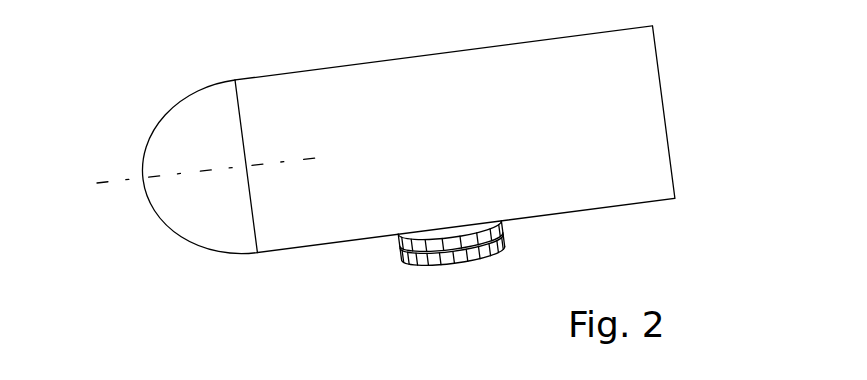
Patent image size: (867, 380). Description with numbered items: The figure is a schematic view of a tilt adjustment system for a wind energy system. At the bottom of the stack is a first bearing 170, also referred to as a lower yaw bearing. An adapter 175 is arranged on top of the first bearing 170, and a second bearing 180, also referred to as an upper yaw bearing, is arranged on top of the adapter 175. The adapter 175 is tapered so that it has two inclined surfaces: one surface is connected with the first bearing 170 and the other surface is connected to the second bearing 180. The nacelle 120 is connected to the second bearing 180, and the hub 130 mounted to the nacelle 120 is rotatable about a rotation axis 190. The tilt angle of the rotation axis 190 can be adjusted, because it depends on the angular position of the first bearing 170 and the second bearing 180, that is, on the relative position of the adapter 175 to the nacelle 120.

The nacelle 120 is at (665, 115).
The hub 130 is at (210, 248).
The first bearing 170 is at (435, 263).
The adapter 175 is at (503, 240).
The second bearing 180 is at (503, 227).
The rotation axis 190 is at (130, 178).